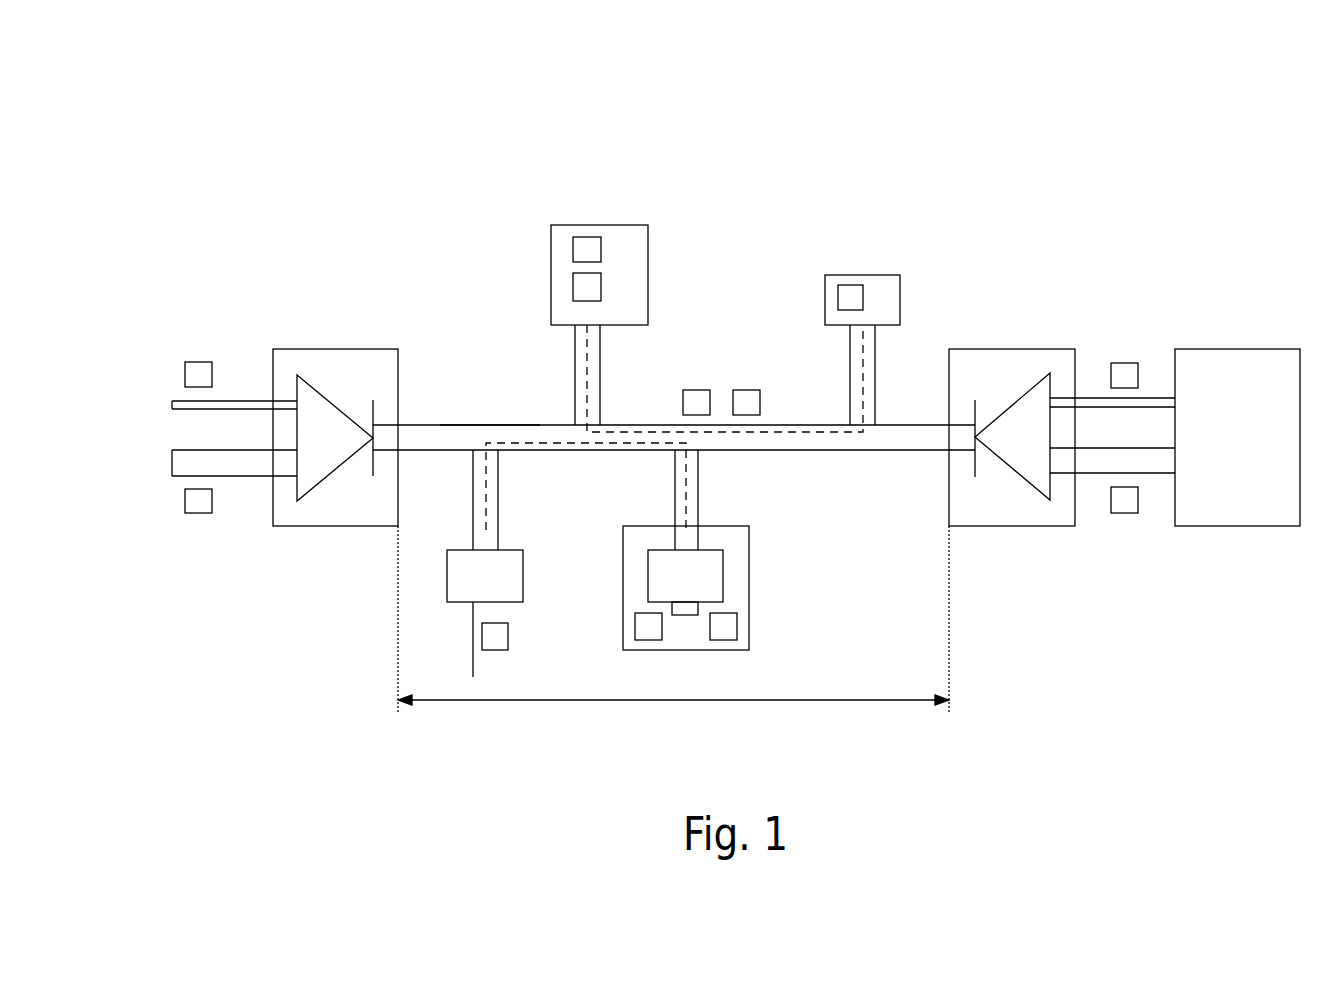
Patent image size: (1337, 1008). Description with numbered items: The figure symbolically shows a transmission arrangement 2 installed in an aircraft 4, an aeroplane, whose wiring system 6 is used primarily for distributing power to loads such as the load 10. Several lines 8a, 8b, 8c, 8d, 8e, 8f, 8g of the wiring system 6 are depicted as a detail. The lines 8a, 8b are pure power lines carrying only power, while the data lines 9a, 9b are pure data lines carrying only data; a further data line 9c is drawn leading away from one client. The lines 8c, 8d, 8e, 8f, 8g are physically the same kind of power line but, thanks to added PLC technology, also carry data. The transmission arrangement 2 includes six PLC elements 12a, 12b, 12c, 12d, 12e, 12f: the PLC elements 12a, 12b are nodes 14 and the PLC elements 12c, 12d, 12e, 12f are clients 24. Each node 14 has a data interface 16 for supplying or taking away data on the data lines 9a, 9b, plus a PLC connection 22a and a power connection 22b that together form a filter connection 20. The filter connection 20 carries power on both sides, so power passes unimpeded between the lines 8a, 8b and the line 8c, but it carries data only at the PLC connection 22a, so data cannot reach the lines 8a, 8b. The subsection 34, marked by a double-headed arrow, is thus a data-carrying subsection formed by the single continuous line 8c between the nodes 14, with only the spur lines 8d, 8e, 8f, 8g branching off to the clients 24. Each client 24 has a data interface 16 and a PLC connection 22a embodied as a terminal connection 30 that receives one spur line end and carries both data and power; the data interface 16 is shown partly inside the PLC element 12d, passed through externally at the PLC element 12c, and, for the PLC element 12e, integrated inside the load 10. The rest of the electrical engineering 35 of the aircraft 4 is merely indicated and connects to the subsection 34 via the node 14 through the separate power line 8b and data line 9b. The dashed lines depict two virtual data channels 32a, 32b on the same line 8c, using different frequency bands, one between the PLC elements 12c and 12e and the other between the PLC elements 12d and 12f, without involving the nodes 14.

The transmission arrangement 2 is at (1162, 190).
The aircraft 4 is at (941, 170).
The wiring system 6 is at (438, 148).
The line 8a is at (178, 476).
The line 8b is at (1158, 473).
The line 8c is at (478, 425).
The line 8d is at (498, 478).
The line 8e is at (600, 393).
The line 8f is at (698, 485).
The line 8g is at (875, 373).
The data line 9a is at (242, 400).
The data line 9b is at (1155, 398).
The data line 9c is at (473, 663).
The load 10 is at (749, 625).
The PLC element 12a is at (312, 349).
The PLC element 12b is at (1022, 526).
The PLC element 12c is at (515, 602).
The PLC element 12d is at (595, 225).
The PLC element 12e is at (723, 563).
The PLC element 12f is at (860, 275).
The node 14 is at (668, 456).
The data interface 16 is at (272, 411).
The filter connection 20 is at (654, 454).
The PLC connection 22a is at (398, 425).
The power connection 22b is at (654, 459).
The client 24 is at (673, 399).
The terminal connection 30 is at (752, 423).
The virtual data channel 32a is at (556, 443).
The virtual data channel 32b is at (860, 370).
The subsection 34 is at (775, 703).
The electrical engineering 35 is at (1232, 349).